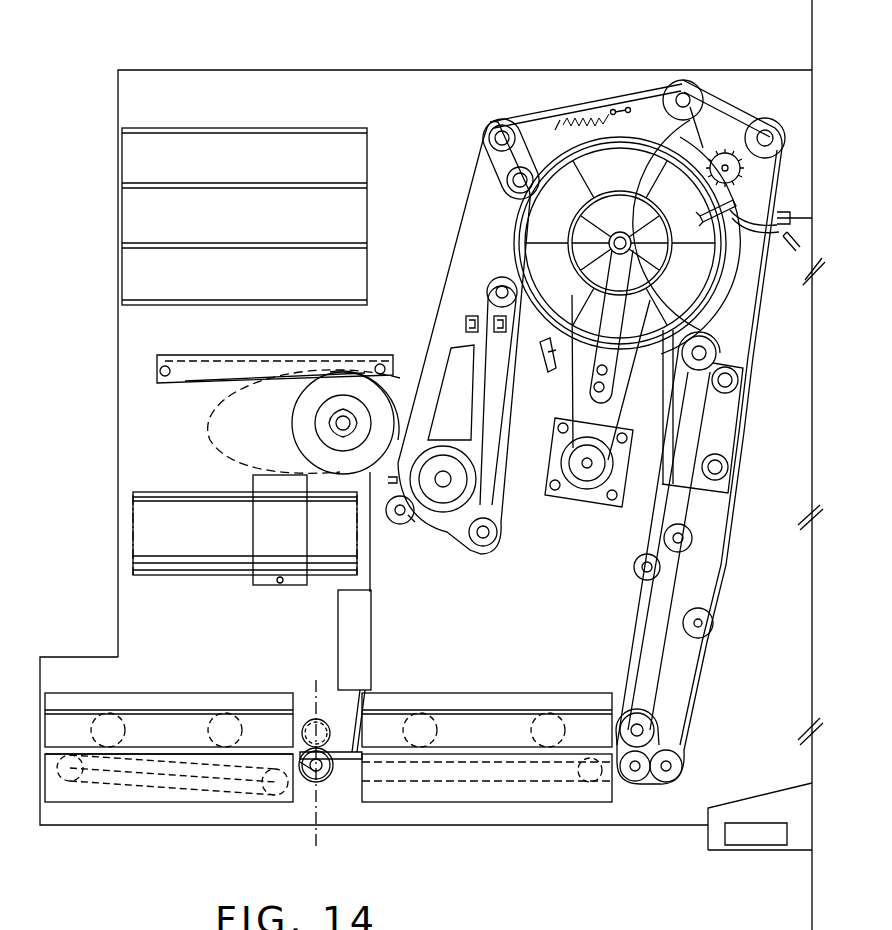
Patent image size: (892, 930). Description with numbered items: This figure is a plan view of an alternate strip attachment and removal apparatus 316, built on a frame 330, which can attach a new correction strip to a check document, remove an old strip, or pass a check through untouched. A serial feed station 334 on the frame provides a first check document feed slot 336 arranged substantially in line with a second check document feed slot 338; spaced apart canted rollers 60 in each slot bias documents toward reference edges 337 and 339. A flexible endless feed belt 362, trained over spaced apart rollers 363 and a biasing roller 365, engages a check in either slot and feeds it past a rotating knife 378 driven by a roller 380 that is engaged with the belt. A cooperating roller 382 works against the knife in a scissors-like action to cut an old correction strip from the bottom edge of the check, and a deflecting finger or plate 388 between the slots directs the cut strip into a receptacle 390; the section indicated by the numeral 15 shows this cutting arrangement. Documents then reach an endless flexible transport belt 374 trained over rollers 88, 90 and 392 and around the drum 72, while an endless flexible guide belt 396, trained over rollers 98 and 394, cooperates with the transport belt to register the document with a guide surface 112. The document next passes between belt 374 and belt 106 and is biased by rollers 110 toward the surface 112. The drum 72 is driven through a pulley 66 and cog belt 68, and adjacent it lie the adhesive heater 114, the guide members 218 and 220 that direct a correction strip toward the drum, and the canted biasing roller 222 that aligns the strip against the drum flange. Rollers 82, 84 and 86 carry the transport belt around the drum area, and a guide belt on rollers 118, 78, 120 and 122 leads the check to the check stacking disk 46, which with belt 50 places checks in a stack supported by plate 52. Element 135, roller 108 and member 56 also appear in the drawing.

The strip attachment and removal apparatus 316 is at (515, 50).
The adhesive heater 114 is at (617, 92).
The roller 84 is at (668, 92).
The roller 82 is at (512, 132).
The canted biasing roller 222 is at (728, 155).
The belt 135 is at (500, 170).
The roller 86 is at (770, 150).
The correction strip attachment and support drum 72 is at (515, 255).
The guide member 218 is at (742, 213).
The roller 118 is at (492, 295).
The guide member 220 is at (748, 246).
The roller 108 is at (705, 358).
The rollers 110 is at (728, 485).
The guide surface 112 is at (720, 432).
The belt 106 is at (668, 437).
The cog belt 68 is at (566, 380).
The pulley 66 is at (587, 478).
The roller 98 is at (668, 540).
The roller 120 is at (445, 512).
The roller 78 is at (444, 505).
The roller 122 is at (483, 542).
The roller 88 is at (700, 627).
The endless flexible guide belt 396 is at (636, 658).
The roller 394 is at (640, 712).
The endless flexible transport belt 374 is at (700, 722).
The roller 90 is at (670, 770).
The receptacle 390 is at (372, 622).
The serial feed station 334 is at (272, 678).
The cooperating roller 382 is at (316, 718).
The canted rollers 60 is at (215, 716).
The correction strip deflecting finger or plate 388 is at (360, 720).
The section line 15 is at (338, 849).
The reference edge 339 is at (55, 752).
The rollers 363 is at (570, 852).
The check document feed slot 338 is at (143, 745).
The biasing roller 365 is at (280, 790).
The rotating knife 378 is at (310, 760).
The roller 380 is at (328, 775).
The flexible endless feed belt 362 is at (322, 772).
The check document feed slot 336 is at (510, 745).
The reference edge 337 is at (632, 773).
The roller 392 is at (640, 770).
The cassette 56 is at (235, 128).
The check stacking disk 46 is at (350, 395).
The belt 50 is at (190, 383).
The plate 52 is at (160, 572).
The frame 330 is at (118, 452).